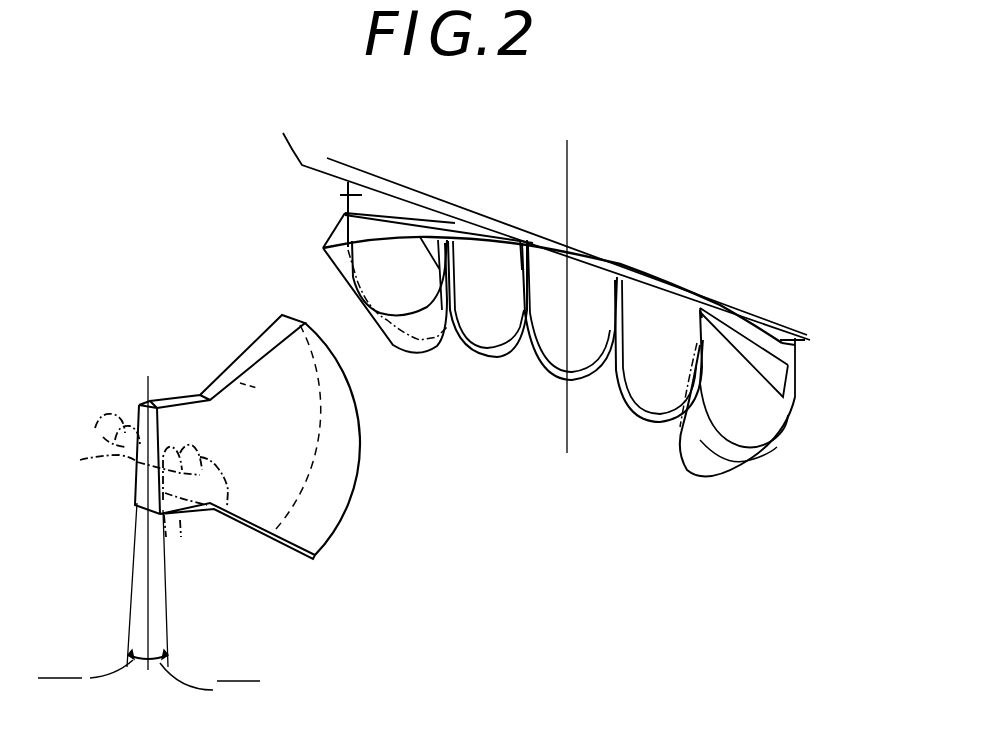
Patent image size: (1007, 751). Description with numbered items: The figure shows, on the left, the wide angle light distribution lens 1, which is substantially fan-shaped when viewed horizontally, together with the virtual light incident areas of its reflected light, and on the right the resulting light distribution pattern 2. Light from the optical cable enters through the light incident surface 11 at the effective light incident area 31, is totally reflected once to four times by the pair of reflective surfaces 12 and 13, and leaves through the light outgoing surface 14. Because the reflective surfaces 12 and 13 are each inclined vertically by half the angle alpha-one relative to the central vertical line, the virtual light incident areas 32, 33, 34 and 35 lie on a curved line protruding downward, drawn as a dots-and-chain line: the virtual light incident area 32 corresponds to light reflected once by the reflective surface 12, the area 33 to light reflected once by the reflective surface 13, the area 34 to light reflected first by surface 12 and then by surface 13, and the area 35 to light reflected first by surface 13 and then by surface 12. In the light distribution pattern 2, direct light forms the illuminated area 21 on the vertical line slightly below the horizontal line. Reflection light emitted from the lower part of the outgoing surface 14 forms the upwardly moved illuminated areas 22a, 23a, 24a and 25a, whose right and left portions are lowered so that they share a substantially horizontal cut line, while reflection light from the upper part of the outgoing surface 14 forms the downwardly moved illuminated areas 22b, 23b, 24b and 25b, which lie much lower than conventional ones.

The wide angle light distribution lens 1 is at (241, 306).
The light distribution pattern 2 is at (603, 236).
The light incident surface 11 is at (135, 502).
The reflective surface 12 is at (268, 490).
The reflective surface 13 is at (232, 381).
The light outgoing surface 14 is at (333, 470).
The illuminated area 21 is at (553, 357).
The illuminated area 22a is at (345, 197).
The illuminated area 22b is at (502, 358).
The illuminated area 23a is at (796, 378).
The illuminated area 23b is at (643, 422).
The illuminated area 24a is at (345, 185).
The illuminated area 24b is at (340, 267).
The illuminated area 25a is at (797, 365).
The illuminated area 25b is at (710, 462).
The effective light incident area 31 is at (137, 462).
The virtual light incident area 32 is at (177, 513).
The virtual light incident area 33 is at (82, 460).
The virtual light incident area 34 is at (220, 513).
The virtual light incident area 35 is at (95, 426).